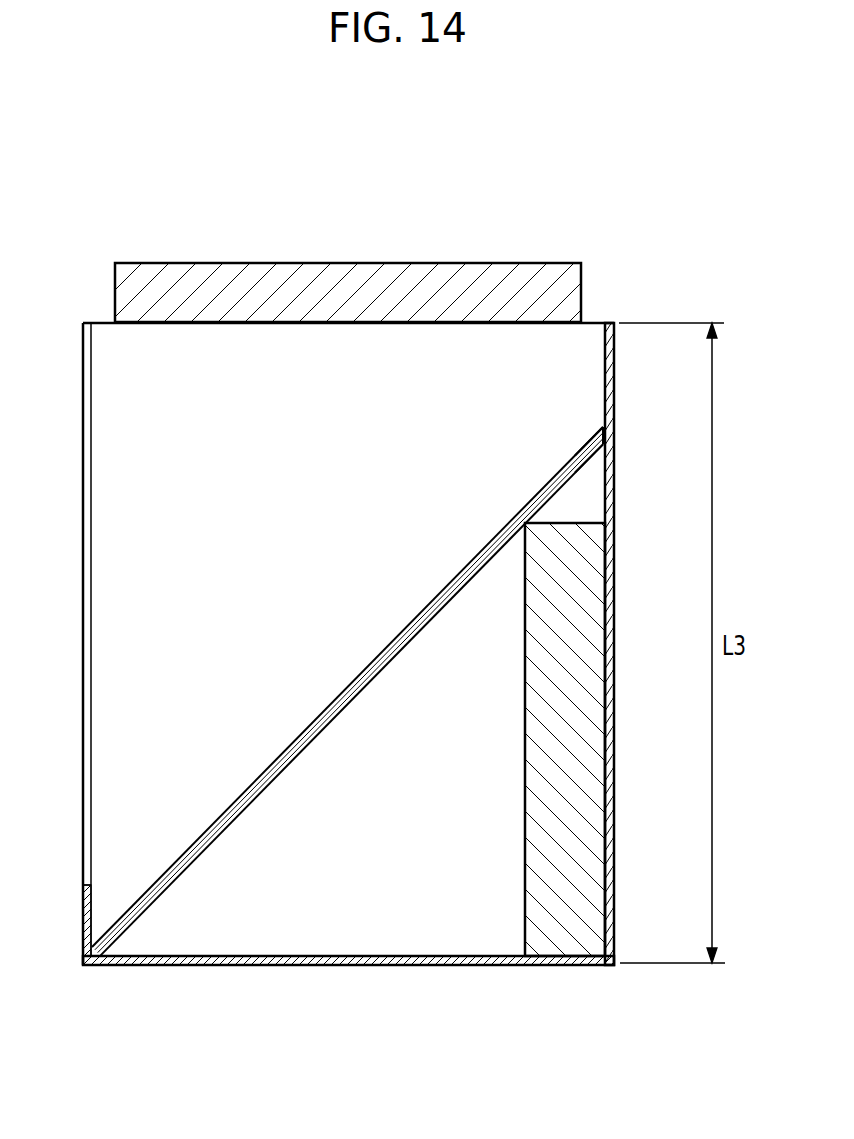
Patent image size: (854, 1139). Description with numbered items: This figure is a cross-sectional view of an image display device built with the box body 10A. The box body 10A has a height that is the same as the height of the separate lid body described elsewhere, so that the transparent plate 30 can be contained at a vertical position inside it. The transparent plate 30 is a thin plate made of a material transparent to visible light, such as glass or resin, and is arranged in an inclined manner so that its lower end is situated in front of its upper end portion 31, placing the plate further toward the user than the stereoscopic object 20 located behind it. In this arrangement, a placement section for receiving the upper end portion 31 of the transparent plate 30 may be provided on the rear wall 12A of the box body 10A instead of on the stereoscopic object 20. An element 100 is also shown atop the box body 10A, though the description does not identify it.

The box body 10A is at (629, 299).
The rear wall 12A is at (614, 486).
The lid / cover block 100 is at (356, 262).
The stereoscopic object 20 is at (590, 752).
The transparent plate 30 is at (303, 738).
The upper end portion 31 is at (598, 437).